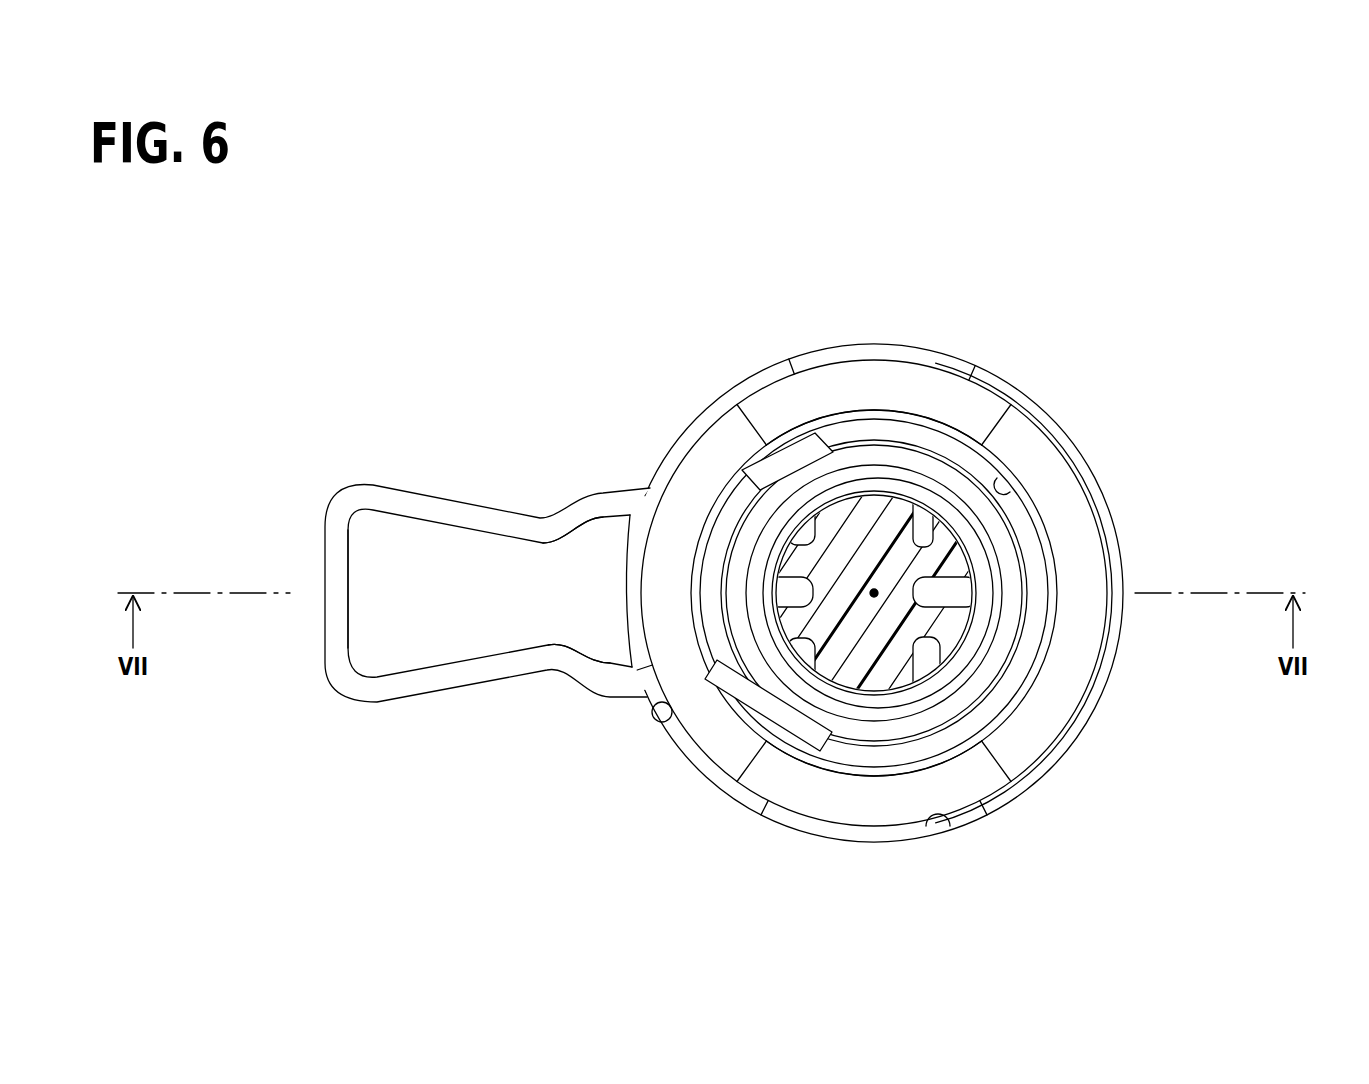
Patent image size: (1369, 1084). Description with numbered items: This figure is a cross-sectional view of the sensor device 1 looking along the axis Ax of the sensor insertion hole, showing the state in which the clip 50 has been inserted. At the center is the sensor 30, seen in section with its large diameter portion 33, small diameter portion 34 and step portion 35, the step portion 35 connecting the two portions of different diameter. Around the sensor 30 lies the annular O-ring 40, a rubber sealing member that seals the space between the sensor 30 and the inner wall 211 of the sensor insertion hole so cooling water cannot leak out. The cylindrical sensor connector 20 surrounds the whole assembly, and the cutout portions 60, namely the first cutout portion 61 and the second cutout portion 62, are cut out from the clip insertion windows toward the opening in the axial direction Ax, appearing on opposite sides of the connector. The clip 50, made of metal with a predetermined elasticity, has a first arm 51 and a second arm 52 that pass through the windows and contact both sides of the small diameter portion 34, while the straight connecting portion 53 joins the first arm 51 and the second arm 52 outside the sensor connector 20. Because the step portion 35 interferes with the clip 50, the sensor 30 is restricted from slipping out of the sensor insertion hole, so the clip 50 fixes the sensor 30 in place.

The sensor device 1 is at (1060, 289).
The sensor connector 20 is at (677, 438).
The inner wall 211 is at (1007, 492).
The sensor 30 is at (843, 620).
The large diameter portion 33 is at (1000, 688).
The small diameter portion 34 is at (975, 607).
The step portion 35 is at (985, 650).
The O-ring 40 is at (1022, 543).
The clip 50 is at (428, 492).
The first arm 51 is at (598, 512).
The second arm 52 is at (612, 690).
The connecting portion 53 is at (337, 572).
The cutout portions 60 is at (874, 593).
The first cutout portion 61 is at (757, 427).
The second cutout portion 62 is at (748, 768).
The axis Ax is at (872, 590).